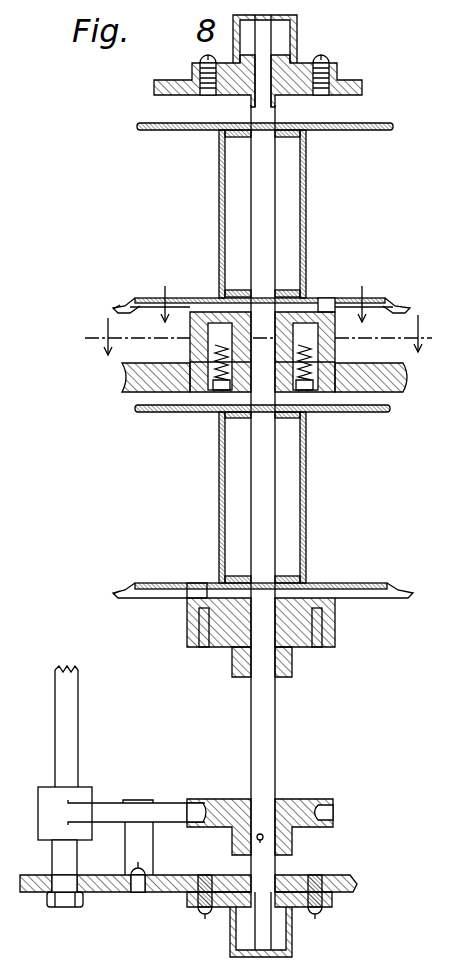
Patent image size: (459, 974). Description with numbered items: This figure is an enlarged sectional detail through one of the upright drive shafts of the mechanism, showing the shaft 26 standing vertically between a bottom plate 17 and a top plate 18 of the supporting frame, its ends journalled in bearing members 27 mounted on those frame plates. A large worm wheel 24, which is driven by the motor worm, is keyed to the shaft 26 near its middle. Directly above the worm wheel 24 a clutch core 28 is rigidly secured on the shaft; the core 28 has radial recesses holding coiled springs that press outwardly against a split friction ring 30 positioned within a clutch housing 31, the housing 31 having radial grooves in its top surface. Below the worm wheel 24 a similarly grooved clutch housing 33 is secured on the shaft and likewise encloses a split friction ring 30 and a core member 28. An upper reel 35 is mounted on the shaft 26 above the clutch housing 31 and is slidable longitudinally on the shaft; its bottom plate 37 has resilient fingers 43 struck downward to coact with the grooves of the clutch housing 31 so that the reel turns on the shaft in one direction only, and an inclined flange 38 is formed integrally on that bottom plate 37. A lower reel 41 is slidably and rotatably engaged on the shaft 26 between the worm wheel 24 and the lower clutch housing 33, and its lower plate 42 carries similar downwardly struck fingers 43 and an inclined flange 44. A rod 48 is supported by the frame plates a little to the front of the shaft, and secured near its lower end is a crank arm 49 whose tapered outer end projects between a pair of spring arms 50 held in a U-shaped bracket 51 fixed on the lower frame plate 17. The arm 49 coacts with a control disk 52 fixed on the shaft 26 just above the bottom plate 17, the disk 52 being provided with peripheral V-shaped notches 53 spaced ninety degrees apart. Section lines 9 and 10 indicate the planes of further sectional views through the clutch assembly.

The section line 9- 9 is at (257, 312).
The section line 10- 10 is at (256, 342).
The bottom plate 17 is at (353, 890).
The top plate 18 is at (360, 85).
The worm wheel 24 is at (405, 373).
The upright shaft 26 is at (267, 740).
The bearing member 27 is at (285, 62).
The clutch core 28 is at (215, 377).
The split friction ring 30 is at (208, 337).
The clutch housing 31 is at (308, 300).
The clutch housing 33 is at (327, 618).
The upper reel 35 is at (306, 172).
The bottom plate 37 is at (372, 297).
The inclined flange 38 is at (120, 308).
The lower reel 41 is at (307, 512).
The lower plate 42 is at (158, 585).
The resilient fingers 43 is at (333, 300).
The inclined flange 44 is at (117, 593).
The rod 48 is at (65, 698).
The crank arm 49 is at (107, 813).
The spring arms 50 is at (140, 838).
The U-shaped bracket 51 is at (123, 880).
The control disk 52 is at (292, 798).
The V-shaped notches 53 is at (205, 805).